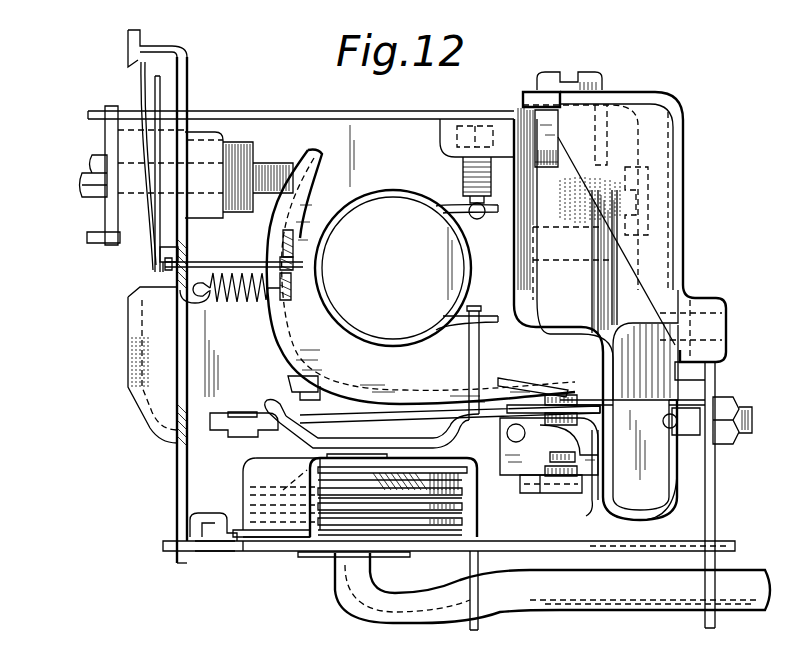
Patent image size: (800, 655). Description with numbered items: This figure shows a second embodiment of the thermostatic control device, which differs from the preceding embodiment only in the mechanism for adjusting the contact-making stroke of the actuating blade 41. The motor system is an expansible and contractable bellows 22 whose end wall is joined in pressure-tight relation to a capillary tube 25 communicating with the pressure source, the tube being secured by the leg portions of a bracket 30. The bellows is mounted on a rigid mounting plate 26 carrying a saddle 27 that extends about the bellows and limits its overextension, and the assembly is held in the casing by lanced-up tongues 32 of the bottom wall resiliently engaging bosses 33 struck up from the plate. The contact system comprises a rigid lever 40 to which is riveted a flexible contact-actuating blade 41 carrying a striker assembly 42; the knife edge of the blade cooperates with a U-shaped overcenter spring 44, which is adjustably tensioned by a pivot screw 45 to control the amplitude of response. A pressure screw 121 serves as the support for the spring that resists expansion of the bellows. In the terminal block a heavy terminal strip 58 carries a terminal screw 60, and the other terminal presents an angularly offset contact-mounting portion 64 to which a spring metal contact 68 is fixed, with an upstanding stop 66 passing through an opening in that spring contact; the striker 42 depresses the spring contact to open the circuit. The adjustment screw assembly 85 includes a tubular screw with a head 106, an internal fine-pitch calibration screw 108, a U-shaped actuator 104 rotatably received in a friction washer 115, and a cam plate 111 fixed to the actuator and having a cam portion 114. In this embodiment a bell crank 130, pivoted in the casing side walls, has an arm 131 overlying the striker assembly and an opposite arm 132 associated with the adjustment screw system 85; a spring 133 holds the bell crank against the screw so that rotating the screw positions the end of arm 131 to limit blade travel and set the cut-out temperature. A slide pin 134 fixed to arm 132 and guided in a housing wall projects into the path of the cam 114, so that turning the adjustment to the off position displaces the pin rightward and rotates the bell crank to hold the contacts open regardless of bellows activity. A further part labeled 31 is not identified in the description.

The friction washer 115 is at (140, 90).
The cam plate 111 is at (160, 92).
The adjustment screw assembly 85 is at (234, 136).
The head 106 is at (108, 134).
The calibration screw 108 is at (82, 184).
The U-shaped actuator 104 is at (98, 236).
The cam portion 114 is at (160, 256).
The slide pin 134 is at (231, 262).
The arm 132 is at (296, 248).
The spring 133 is at (216, 304).
The bell crank 130 is at (285, 348).
The pressure screw 121 is at (463, 173).
The terminal screw 60 is at (645, 188).
The contact-mounting portion 64 is at (578, 363).
The terminal strip 58 is at (598, 370).
The arm 131 is at (565, 390).
The rigid lever 40 is at (406, 428).
The flexible contact-actuating blade 41 is at (312, 406).
The striker assembly 42 is at (560, 422).
The upstanding stop 66 is at (553, 493).
The spring metal contact 68 is at (592, 481).
The overcenter spring 44 is at (655, 520).
The pivot screw 45 is at (738, 445).
The saddle 27 is at (238, 486).
The lanced-up tongues 32 is at (212, 518).
The bosses 33 is at (210, 551).
The mounting plate 26 is at (267, 552).
The bellows 22 is at (342, 520).
The tube 25 is at (400, 614).
The bracket 30 is at (480, 622).
The rod 31 is at (708, 612).